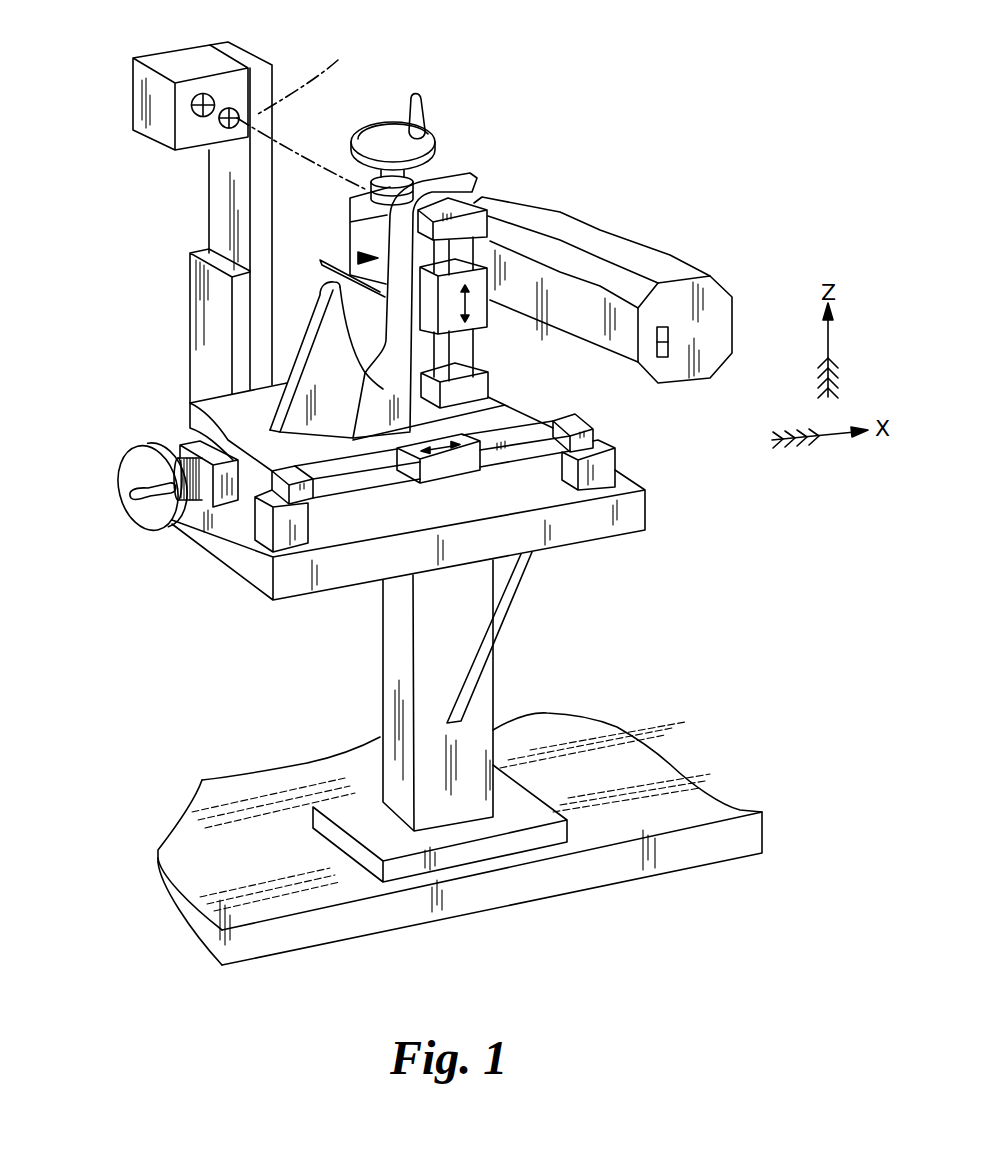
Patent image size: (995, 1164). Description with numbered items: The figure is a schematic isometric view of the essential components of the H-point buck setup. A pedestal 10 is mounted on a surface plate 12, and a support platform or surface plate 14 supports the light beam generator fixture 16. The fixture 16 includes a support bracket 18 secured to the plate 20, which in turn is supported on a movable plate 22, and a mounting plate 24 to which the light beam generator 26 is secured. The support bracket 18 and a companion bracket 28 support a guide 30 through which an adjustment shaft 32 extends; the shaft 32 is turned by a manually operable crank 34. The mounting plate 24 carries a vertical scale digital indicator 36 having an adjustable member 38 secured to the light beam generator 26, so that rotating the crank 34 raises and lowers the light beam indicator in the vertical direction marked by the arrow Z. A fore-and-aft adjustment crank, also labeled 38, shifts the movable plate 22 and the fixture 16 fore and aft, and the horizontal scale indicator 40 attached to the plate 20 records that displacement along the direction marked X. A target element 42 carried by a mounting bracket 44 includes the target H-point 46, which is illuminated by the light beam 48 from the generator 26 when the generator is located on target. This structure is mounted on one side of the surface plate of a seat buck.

The pedestal 10 is at (387, 690).
The surface plate 12 is at (340, 807).
The support platform or surface plate 14 is at (632, 507).
The light beam generator fixture 16 is at (358, 258).
The support bracket 18 is at (320, 262).
The plate 20 is at (510, 422).
The movable plate 22 is at (190, 403).
The mounting plate 24 is at (350, 222).
The light beam generator 26 is at (612, 274).
The companion bracket 28 is at (325, 377).
The guide 30 is at (350, 198).
The adjustment shaft 32 is at (430, 158).
The manually operable crank 34 is at (430, 98).
The vertical scale digital indicator 36 is at (488, 314).
The adjustable member 38 is at (460, 253).
The horizontal scale indicator 40 is at (398, 483).
The target element 42 is at (162, 102).
The mounting bracket 44 is at (222, 200).
The target H-point 46 is at (239, 110).
The light beam 48 is at (302, 112).